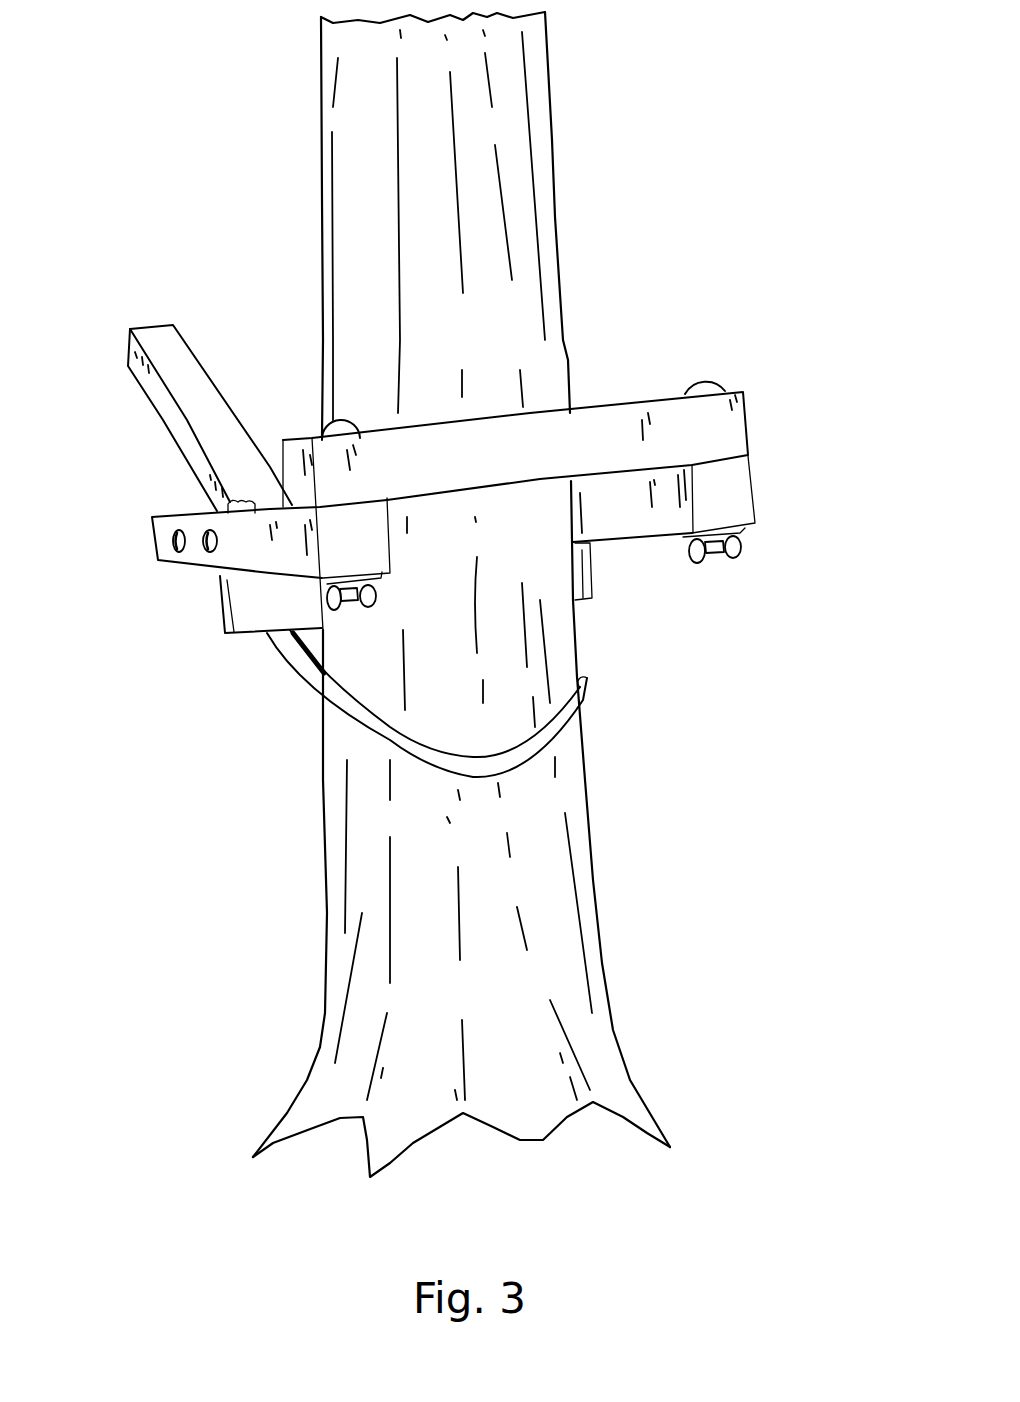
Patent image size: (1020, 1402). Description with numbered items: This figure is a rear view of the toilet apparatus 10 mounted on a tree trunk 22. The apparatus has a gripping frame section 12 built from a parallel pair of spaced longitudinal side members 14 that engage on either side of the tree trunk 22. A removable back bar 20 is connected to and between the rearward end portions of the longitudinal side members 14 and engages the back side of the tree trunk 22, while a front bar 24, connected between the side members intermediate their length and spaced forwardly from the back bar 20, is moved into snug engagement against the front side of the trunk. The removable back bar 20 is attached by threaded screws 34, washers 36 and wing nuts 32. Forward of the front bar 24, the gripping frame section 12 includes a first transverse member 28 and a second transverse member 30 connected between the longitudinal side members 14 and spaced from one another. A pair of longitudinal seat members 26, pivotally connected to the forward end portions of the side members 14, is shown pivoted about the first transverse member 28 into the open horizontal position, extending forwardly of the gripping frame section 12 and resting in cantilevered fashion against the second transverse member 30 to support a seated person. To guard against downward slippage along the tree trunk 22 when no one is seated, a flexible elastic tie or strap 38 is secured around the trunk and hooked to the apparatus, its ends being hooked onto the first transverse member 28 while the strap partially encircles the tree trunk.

The toilet apparatus 10 is at (640, 326).
The gripping frame section 12 is at (643, 535).
The longitudinal side members 14 is at (733, 495).
The removable back bar 20 is at (723, 430).
The tree trunk 22 is at (532, 113).
The front bar 24 is at (247, 615).
The longitudinal seat members 26 is at (203, 415).
The first transverse member 28 is at (207, 552).
The second transverse member 30 is at (173, 550).
The wing nuts 32 is at (337, 609).
The threaded screws 34 is at (333, 423).
The washers 36 is at (380, 577).
The flexible elastic tie or strap 38 is at (553, 748).